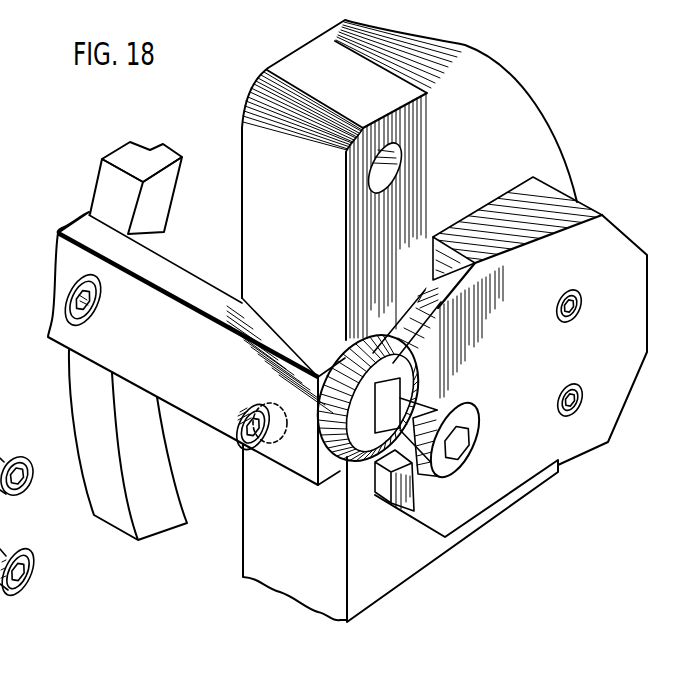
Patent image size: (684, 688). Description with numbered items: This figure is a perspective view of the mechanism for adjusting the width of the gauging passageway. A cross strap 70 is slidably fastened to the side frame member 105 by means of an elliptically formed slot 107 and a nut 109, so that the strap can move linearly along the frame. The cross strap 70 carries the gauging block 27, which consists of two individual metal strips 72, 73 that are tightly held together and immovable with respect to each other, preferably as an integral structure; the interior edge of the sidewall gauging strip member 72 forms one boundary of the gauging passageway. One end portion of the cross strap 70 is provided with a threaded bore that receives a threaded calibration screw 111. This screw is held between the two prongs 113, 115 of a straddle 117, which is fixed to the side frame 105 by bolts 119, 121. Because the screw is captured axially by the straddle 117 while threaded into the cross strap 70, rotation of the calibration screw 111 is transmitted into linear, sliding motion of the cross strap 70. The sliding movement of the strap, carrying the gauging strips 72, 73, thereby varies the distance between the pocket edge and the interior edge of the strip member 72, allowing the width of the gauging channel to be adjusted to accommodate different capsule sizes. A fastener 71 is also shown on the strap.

The gauging block 27 is at (125, 549).
The cross strap 70 is at (200, 398).
The screw 71 is at (64, 297).
The sidewall gauging strip member 72 is at (160, 158).
The metal strip 73 is at (123, 157).
The side frame member 105 is at (496, 114).
The elliptically formed slot 107 is at (248, 406).
The nut 109 is at (275, 446).
The threaded calibration screw 111 is at (340, 455).
The prong 113 is at (372, 432).
The prong 115 is at (387, 491).
The straddle 117 is at (547, 443).
The bolt 119 is at (582, 308).
The bolt 121 is at (582, 400).